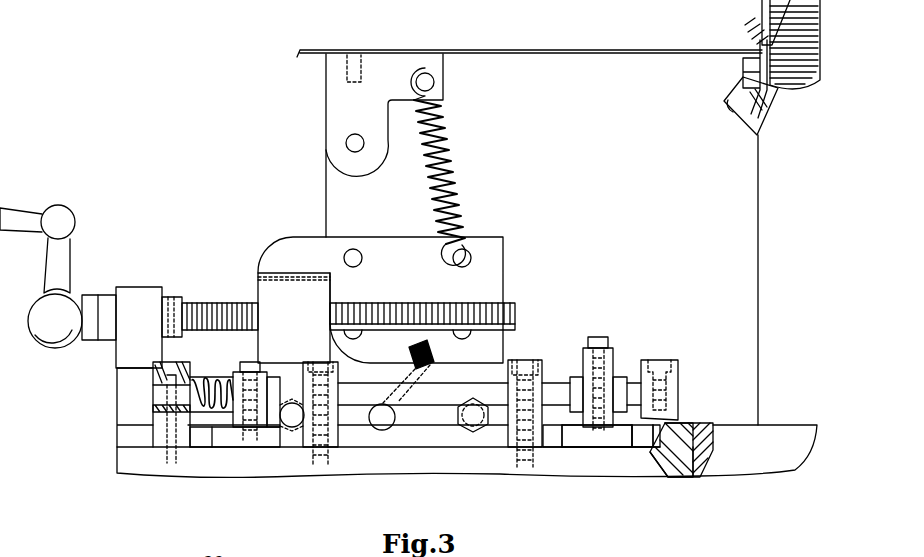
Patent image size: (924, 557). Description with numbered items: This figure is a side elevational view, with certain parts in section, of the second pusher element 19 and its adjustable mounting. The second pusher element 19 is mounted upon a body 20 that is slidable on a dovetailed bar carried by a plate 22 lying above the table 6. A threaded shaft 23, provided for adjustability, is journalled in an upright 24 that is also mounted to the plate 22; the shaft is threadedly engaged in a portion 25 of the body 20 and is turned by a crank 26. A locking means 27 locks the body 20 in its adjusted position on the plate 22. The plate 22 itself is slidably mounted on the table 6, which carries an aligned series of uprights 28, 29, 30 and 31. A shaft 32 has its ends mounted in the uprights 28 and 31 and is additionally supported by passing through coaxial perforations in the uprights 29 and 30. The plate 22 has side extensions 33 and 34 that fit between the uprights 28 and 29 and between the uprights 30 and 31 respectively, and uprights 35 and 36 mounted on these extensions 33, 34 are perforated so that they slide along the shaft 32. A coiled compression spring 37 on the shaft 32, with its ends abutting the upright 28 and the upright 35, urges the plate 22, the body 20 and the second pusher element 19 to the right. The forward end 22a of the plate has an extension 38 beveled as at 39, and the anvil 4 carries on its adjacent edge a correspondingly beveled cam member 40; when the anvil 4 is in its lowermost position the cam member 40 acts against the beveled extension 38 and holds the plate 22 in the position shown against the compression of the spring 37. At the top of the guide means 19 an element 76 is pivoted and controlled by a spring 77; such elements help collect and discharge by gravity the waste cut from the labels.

The anvil 4 is at (808, 485).
The table 6 is at (645, 462).
The second pusher element 19 is at (573, 212).
The body 20 is at (422, 302).
The plate 22 is at (484, 438).
The forward end of the plate 22a is at (653, 441).
The threaded shaft 23 is at (212, 308).
The upright 24 is at (122, 327).
The portion of the body 25 is at (294, 318).
The crank 26 is at (62, 268).
The locking means 27 is at (430, 352).
The upright 28 is at (158, 430).
The upright 29 is at (333, 448).
The upright 30 is at (537, 442).
The upright 31 is at (676, 373).
The shaft 32 is at (553, 391).
The side extension 33 is at (237, 440).
The side extension 34 is at (578, 442).
The upright 35 is at (240, 388).
The upright 36 is at (612, 366).
The coiled compression spring 37 is at (207, 380).
The extension 38 is at (666, 456).
The bevel 39 is at (672, 462).
The cam member 40 is at (683, 432).
The element 76 is at (535, 49).
The spring 77 is at (462, 170).